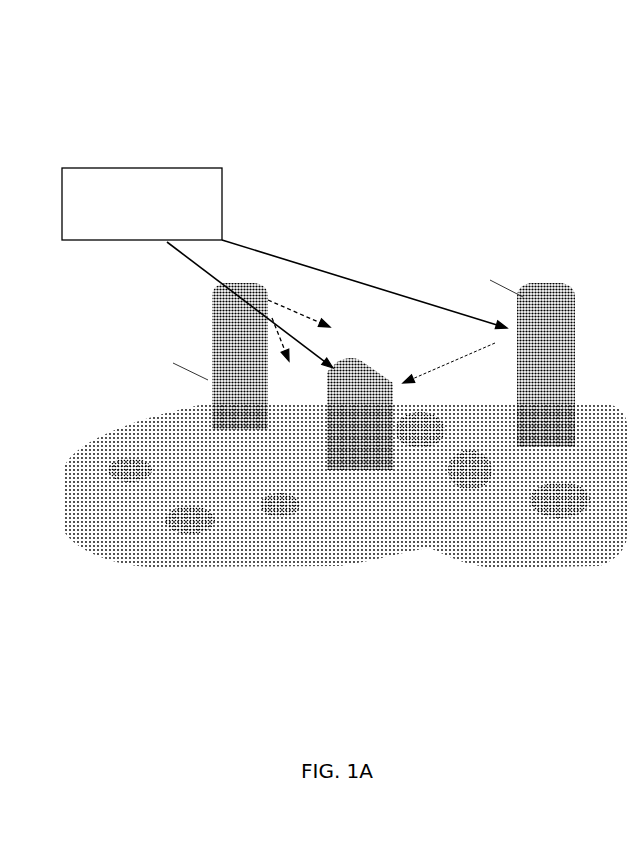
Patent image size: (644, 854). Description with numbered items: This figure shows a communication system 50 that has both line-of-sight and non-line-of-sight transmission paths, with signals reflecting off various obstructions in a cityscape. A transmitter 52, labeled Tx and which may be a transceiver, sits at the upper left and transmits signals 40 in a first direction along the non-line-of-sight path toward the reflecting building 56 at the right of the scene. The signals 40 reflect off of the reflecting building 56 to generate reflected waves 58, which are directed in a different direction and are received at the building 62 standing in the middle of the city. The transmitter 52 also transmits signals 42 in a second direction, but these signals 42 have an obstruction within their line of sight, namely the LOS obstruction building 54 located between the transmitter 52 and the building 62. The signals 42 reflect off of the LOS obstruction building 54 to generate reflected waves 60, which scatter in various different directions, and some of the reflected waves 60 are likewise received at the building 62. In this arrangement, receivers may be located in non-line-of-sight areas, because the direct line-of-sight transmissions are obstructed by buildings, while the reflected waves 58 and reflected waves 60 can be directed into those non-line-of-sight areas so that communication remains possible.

The signals 40 is at (366, 266).
The signals 42 is at (238, 305).
The communication system 50 is at (250, 92).
The transmitter 52 is at (140, 168).
The LOS obstruction building 54 is at (186, 356).
The reflecting building 56 is at (508, 348).
The reflected waves 58 is at (449, 373).
The reflected waves 60 is at (306, 371).
The building 62 is at (351, 467).